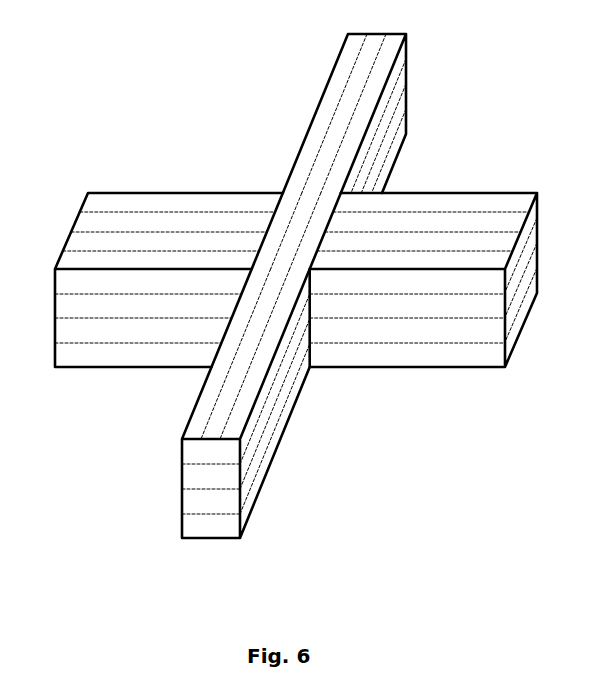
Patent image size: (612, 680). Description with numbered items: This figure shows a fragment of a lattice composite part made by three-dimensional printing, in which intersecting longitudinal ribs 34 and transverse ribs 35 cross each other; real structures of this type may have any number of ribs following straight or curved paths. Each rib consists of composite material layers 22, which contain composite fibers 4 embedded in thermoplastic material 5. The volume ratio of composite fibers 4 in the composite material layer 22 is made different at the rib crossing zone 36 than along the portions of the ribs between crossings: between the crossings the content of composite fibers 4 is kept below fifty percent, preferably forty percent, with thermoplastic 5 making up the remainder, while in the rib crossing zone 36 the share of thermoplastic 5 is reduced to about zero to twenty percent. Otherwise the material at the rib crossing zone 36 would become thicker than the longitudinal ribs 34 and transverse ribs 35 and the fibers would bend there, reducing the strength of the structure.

The composite fiber 4 is at (283, 285).
The thermoplastic material 5 is at (413, 220).
The layer of composite material 22 is at (182, 532).
The longitudinal rib 34 is at (218, 285).
The transverse rib 35 is at (283, 218).
The rib crossing zone 36 is at (296, 230).